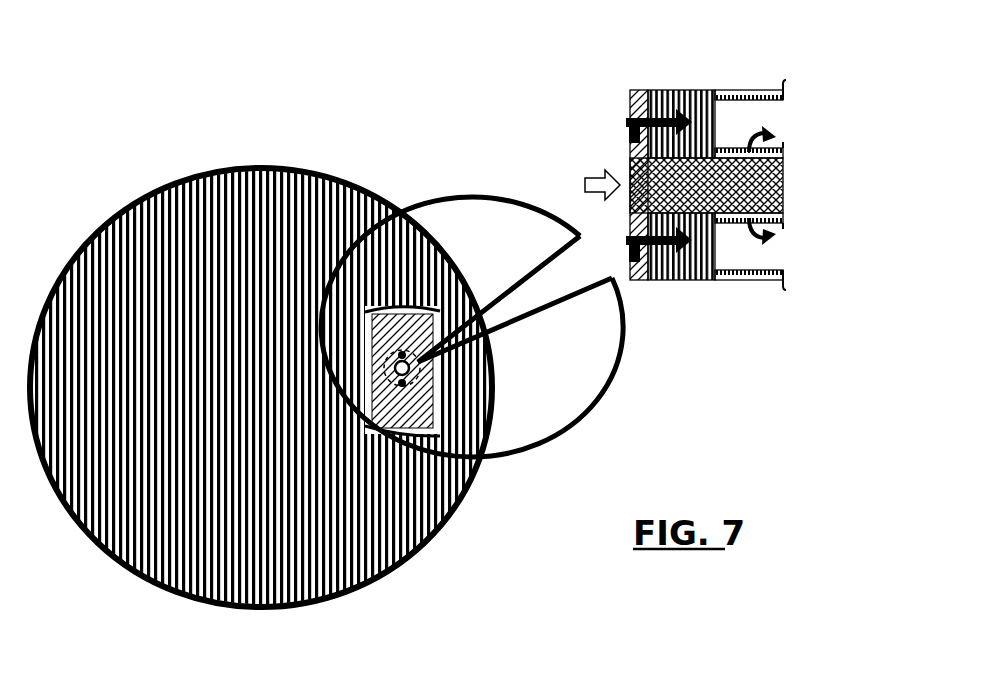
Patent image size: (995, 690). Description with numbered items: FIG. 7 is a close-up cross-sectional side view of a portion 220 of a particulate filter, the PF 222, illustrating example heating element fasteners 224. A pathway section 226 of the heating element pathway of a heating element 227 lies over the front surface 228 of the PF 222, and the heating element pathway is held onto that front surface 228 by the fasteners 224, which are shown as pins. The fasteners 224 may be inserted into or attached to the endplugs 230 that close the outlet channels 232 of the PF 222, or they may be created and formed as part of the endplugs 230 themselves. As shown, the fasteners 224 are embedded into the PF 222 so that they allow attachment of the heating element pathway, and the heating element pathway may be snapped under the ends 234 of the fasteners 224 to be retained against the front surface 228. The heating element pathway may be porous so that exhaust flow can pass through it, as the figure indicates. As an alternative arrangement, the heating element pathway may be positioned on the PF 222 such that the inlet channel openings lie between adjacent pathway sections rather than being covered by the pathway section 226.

The portion 220 is at (788, 72).
The PF 222 is at (213, 166).
The heating element fasteners 224 is at (404, 350).
The pathway section 226 is at (412, 362).
The heating element 227 is at (628, 100).
The front surface 228 is at (457, 517).
The endplugs 230 is at (688, 90).
The outlet channels 232 is at (780, 120).
The ends 234 is at (627, 138).